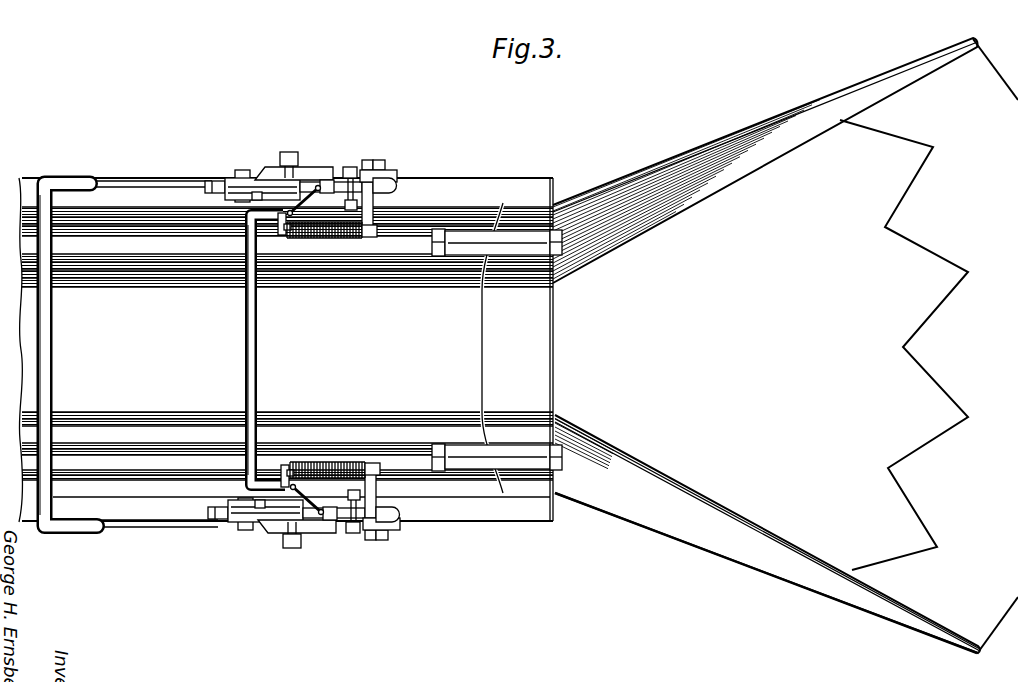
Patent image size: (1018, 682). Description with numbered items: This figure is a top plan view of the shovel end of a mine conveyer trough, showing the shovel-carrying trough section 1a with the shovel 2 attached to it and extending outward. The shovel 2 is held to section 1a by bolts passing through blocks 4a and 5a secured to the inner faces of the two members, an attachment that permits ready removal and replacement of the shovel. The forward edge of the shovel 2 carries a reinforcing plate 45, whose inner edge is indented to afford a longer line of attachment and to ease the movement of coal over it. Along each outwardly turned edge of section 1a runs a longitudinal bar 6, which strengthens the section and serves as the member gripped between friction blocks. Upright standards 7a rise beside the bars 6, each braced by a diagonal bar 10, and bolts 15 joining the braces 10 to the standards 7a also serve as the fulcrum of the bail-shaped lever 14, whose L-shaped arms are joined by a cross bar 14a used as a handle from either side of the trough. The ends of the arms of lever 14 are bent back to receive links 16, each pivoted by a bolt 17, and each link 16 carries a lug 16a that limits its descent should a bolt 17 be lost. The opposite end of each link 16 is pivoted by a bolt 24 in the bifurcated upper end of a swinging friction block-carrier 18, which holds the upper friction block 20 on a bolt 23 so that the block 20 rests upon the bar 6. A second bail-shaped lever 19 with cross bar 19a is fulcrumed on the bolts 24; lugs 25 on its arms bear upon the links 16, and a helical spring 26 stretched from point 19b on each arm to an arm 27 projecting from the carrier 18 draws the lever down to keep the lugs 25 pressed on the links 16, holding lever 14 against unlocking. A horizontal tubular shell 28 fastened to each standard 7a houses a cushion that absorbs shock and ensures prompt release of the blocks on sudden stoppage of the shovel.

The shovel-carrying trough section 1a is at (286, 350).
The shovel 2 is at (785, 345).
The block 4a is at (468, 240).
The block 5a is at (528, 240).
The longitudinal bar 6 is at (168, 195).
The upright standard 7a is at (318, 166).
The diagonal brace bar 10 is at (258, 535).
The bail-shaped lever 14 is at (138, 179).
The cross bar 14a is at (53, 365).
The bolt 15 is at (288, 165).
The link 16 is at (268, 190).
The lug 16a is at (293, 178).
The bolt 17 is at (246, 178).
The friction block-carrier 18 is at (394, 170).
The bail-shaped lever 19 is at (300, 480).
The cross bar 19a is at (247, 383).
The spring attachment point 19b is at (281, 237).
The friction block 20 is at (398, 183).
The bolt 23 is at (367, 160).
The bolt 24 is at (352, 166).
The lug 25 is at (318, 195).
The helical spring 26 is at (346, 240).
The arm 27 is at (369, 240).
The tubular shell 28 is at (330, 180).
The reinforcing plate 45 is at (904, 345).